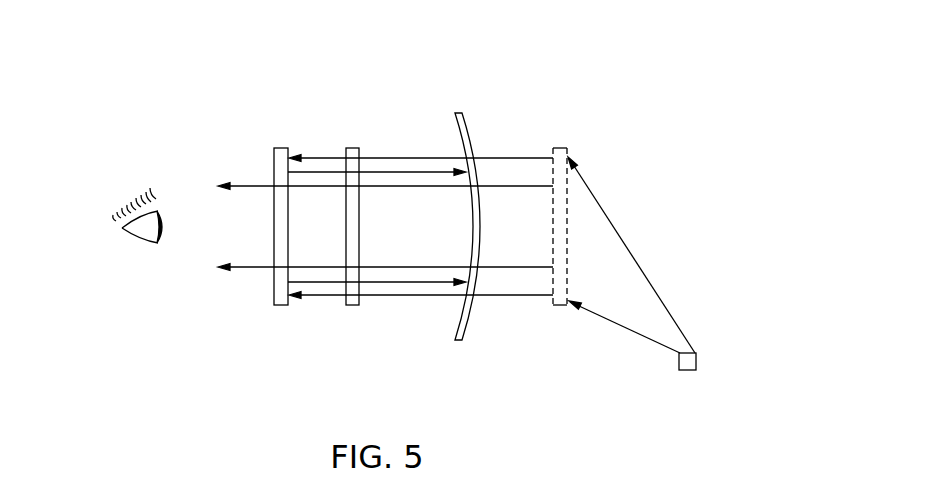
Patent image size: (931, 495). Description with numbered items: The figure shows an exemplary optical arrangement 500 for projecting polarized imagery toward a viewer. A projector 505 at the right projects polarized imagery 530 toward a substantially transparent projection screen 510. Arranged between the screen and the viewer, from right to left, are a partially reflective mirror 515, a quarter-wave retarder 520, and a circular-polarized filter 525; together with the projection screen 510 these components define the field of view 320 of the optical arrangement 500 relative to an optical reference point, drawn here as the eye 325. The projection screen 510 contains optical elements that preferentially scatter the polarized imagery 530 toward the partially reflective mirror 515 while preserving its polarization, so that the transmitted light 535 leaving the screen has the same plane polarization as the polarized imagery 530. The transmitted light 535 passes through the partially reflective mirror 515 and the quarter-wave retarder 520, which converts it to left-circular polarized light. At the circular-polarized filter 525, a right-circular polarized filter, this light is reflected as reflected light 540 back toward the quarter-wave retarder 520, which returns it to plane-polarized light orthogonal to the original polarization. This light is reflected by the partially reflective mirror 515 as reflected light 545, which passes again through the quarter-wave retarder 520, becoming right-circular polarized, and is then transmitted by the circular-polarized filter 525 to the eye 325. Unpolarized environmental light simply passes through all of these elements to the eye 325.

The optical arrangement 500 is at (637, 48).
The field of view 320 is at (690, 158).
The eye 325 is at (134, 246).
The projector 505 is at (682, 372).
The projection screen 510 is at (560, 306).
The partially reflective mirror 515 is at (456, 341).
The quarter-wave retarder 520 is at (350, 306).
The circular-polarized filter 525 is at (280, 306).
The polarized imagery 530 is at (655, 243).
The transmitted light 535 is at (527, 156).
The reflected light 540 is at (407, 168).
The reflected light 545 is at (258, 165).